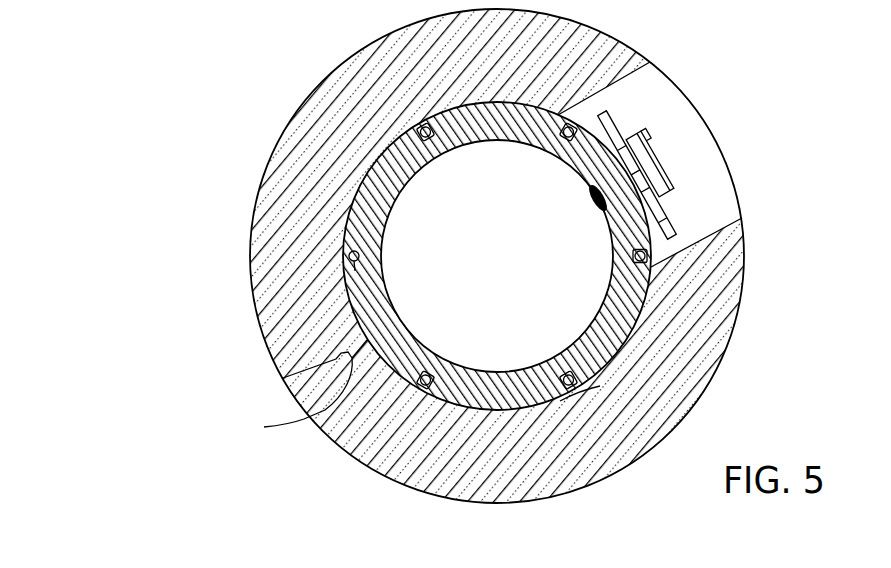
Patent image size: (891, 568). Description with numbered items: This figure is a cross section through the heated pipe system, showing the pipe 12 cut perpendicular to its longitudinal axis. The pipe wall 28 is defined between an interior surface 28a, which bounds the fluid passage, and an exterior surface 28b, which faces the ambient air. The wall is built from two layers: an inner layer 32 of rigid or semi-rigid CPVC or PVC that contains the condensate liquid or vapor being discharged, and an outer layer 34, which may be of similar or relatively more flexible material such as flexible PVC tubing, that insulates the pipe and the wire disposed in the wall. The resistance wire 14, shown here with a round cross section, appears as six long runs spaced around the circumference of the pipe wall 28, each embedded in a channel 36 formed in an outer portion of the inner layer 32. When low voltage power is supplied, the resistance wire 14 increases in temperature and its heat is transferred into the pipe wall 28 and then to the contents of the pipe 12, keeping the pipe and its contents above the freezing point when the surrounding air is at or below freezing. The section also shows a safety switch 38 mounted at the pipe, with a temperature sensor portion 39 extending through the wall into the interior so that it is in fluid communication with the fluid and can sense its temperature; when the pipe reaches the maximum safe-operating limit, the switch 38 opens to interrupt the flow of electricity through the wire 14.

The pipe 12 is at (237, 321).
The resistance wire 14 is at (349, 256).
The pipe wall 28 is at (298, 390).
The interior surface 28a is at (382, 267).
The exterior surface 28b is at (262, 188).
The inner layer 32 is at (479, 390).
The outer layer 34 is at (316, 119).
The channel 36 is at (575, 393).
The safety switch 38 is at (647, 167).
The temperature sensor portion 39 is at (592, 199).